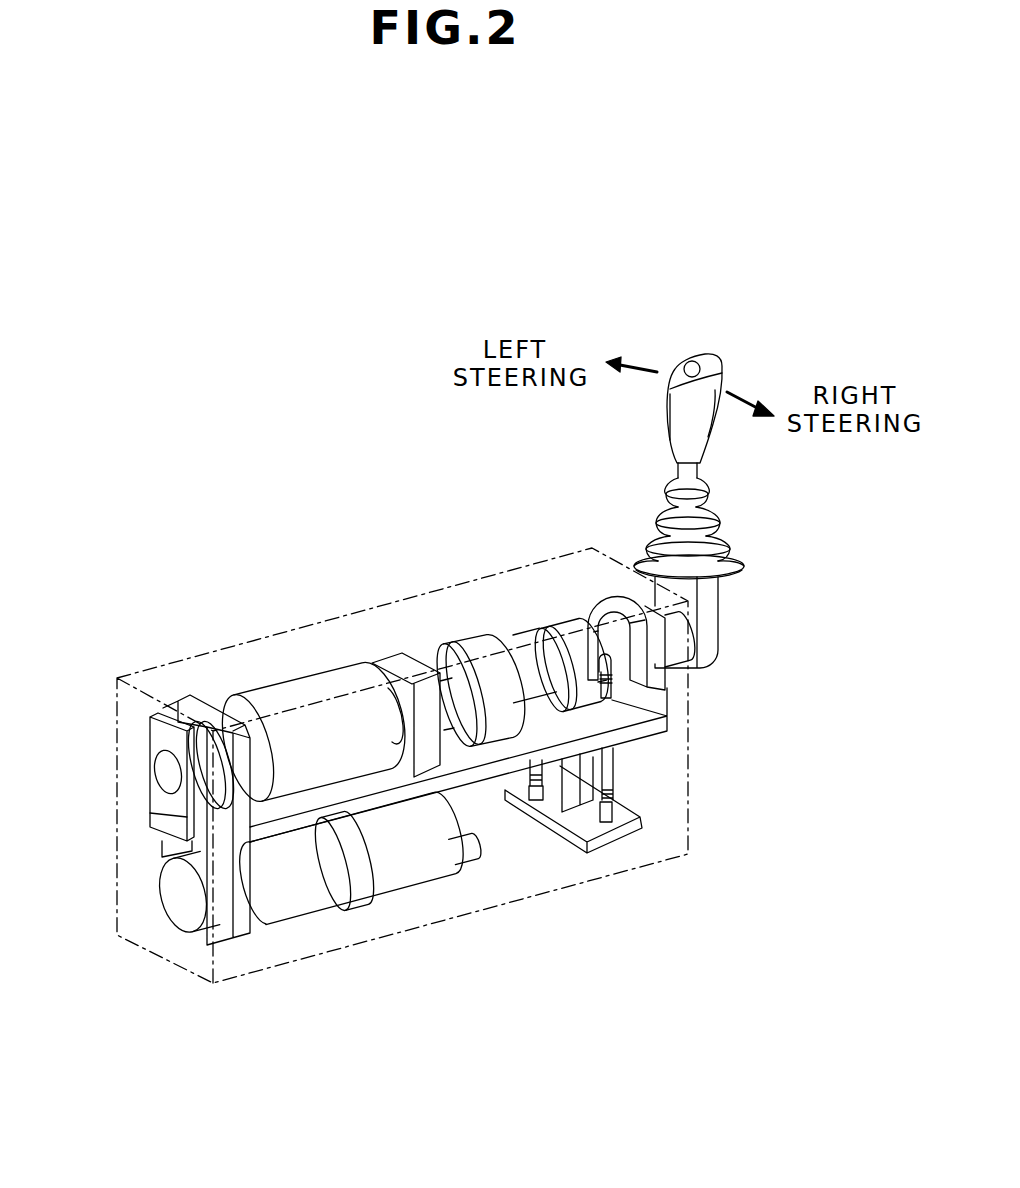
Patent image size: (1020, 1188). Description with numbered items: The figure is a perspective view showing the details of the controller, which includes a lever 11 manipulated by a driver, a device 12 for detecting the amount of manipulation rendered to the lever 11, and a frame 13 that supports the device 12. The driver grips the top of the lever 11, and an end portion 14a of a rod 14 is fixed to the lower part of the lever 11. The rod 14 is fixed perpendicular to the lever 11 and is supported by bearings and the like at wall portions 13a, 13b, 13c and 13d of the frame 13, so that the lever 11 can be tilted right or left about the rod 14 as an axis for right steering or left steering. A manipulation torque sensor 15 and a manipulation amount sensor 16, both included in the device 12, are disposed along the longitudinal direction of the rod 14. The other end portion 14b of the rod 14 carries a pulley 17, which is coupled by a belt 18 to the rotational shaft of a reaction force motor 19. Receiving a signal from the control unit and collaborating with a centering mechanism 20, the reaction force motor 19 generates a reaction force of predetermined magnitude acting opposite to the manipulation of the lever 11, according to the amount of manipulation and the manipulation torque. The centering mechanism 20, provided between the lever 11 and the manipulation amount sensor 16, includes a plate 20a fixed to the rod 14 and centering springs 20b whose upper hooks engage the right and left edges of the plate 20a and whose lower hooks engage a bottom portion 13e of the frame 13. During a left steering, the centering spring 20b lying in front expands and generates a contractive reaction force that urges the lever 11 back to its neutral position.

The lever 11 is at (698, 428).
The device 12 is at (317, 654).
The frame 13 is at (424, 778).
The wall portion 13a is at (650, 633).
The wall portion 13b is at (443, 780).
The wall portion 13c is at (190, 693).
The wall portion 13d is at (163, 733).
The bottom portion 13e is at (617, 823).
The rod 14 is at (615, 642).
The end portion 14a is at (675, 645).
The other end portion 14b is at (167, 772).
The manipulation torque sensor 15 is at (296, 695).
The manipulation amount sensor 16 is at (448, 628).
The pulley 17 is at (150, 813).
The belt 18 is at (162, 857).
The reaction force motor 19 is at (303, 877).
The centering mechanism 20 is at (628, 664).
The plate 20a is at (567, 643).
The centering springs 20b is at (603, 790).